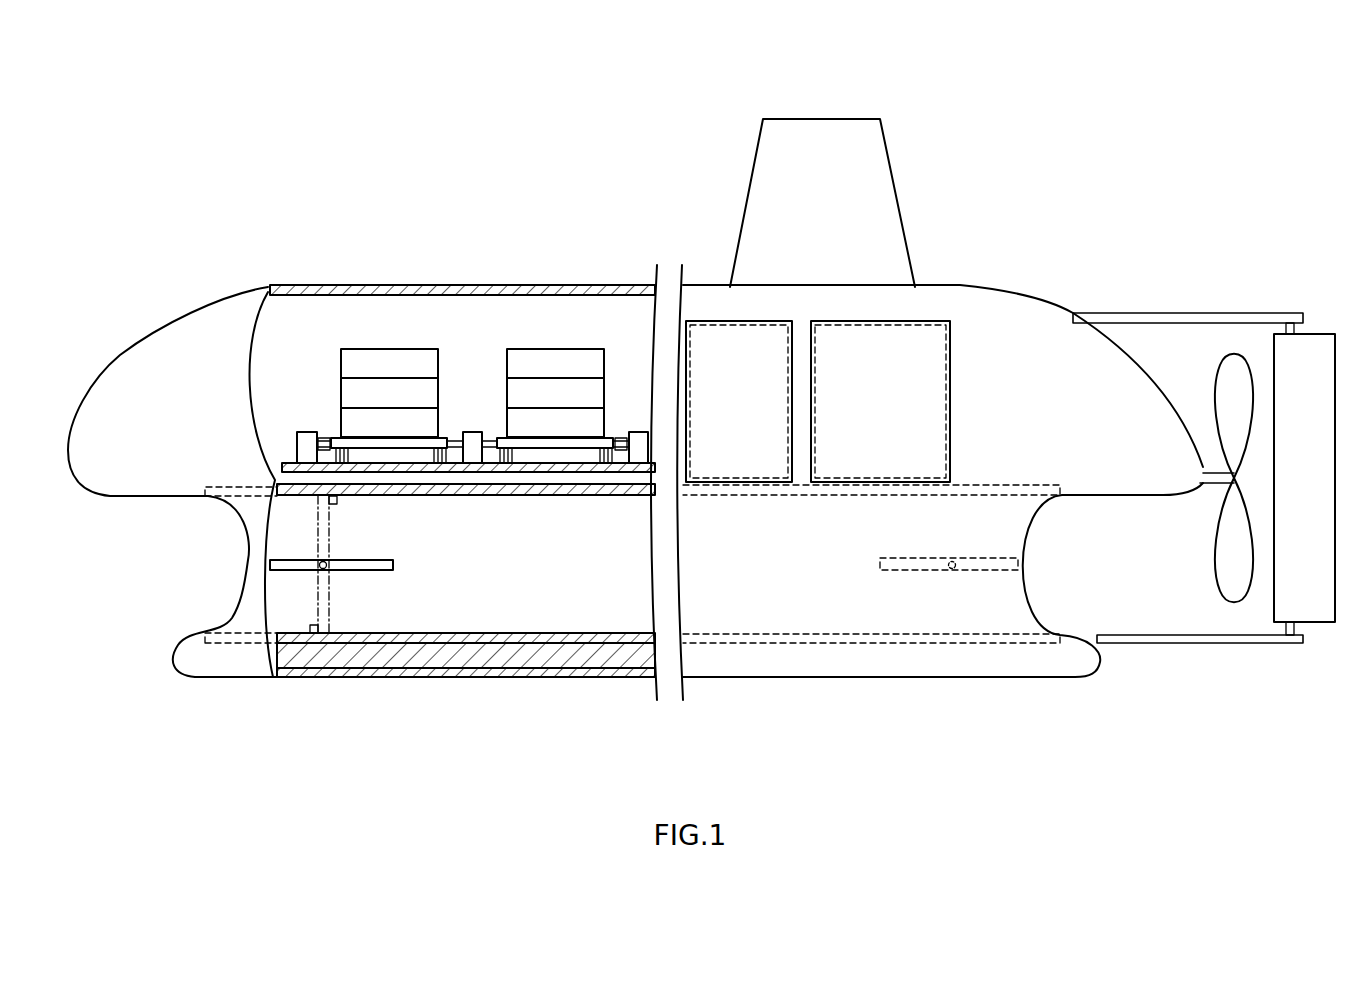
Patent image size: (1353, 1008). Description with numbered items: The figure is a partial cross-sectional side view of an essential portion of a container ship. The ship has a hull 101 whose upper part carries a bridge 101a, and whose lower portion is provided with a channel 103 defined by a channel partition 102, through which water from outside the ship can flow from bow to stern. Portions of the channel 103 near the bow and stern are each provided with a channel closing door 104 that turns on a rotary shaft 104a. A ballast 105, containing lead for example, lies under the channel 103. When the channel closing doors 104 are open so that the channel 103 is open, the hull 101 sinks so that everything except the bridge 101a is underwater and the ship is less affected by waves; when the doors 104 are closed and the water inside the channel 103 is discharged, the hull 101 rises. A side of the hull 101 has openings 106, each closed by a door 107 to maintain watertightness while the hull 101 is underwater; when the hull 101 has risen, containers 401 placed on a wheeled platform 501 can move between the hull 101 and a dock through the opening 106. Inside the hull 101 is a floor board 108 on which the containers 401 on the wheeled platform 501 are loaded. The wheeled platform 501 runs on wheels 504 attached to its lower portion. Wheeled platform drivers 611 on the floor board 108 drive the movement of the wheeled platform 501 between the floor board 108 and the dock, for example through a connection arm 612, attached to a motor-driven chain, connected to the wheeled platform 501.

The hull 101 is at (377, 285).
The bridge 101a is at (818, 125).
The channel partition 102 is at (453, 496).
The channel 103 is at (632, 564).
The channel closing door 104 is at (377, 570).
The rotary shaft 104a is at (323, 565).
The ballast 105 is at (440, 660).
The opening 106 is at (945, 372).
The door 107 is at (923, 347).
The floor board 108 is at (282, 463).
The container 401 is at (407, 348).
The wheeled platform 501 is at (445, 437).
The wheel 504 is at (340, 450).
The wheeled platform driver 611 is at (307, 430).
The connection arm 612 is at (325, 436).